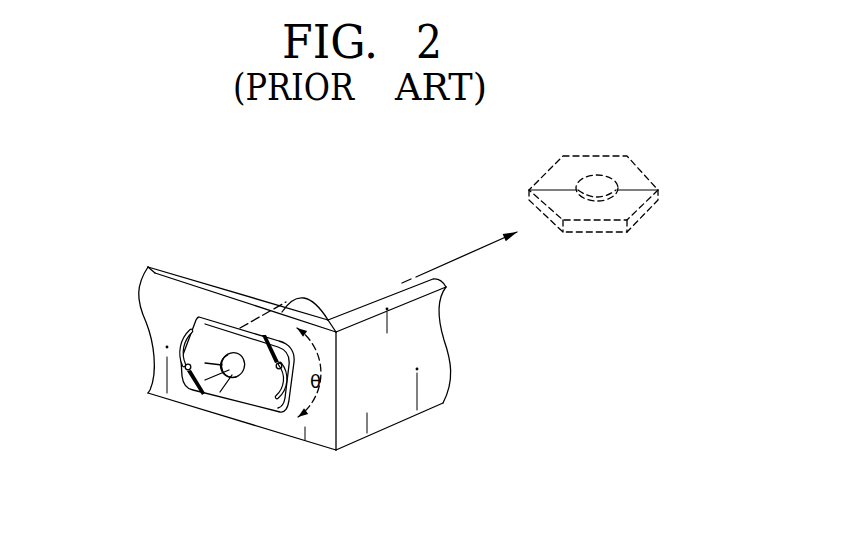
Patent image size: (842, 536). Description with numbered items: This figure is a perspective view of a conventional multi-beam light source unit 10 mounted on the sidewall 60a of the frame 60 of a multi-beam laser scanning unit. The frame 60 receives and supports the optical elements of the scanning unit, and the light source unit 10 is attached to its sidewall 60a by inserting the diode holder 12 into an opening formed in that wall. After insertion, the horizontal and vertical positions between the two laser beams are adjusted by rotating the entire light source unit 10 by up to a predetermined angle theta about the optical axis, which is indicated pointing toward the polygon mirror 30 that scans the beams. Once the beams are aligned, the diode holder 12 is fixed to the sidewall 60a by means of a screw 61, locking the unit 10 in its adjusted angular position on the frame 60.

The multi-beam light source unit 10 is at (291, 283).
The diode holder 12 is at (187, 345).
The polygon mirror 30 is at (660, 190).
The frame 60 is at (257, 391).
The sidewall 60a is at (157, 289).
The screw 61 is at (276, 368).